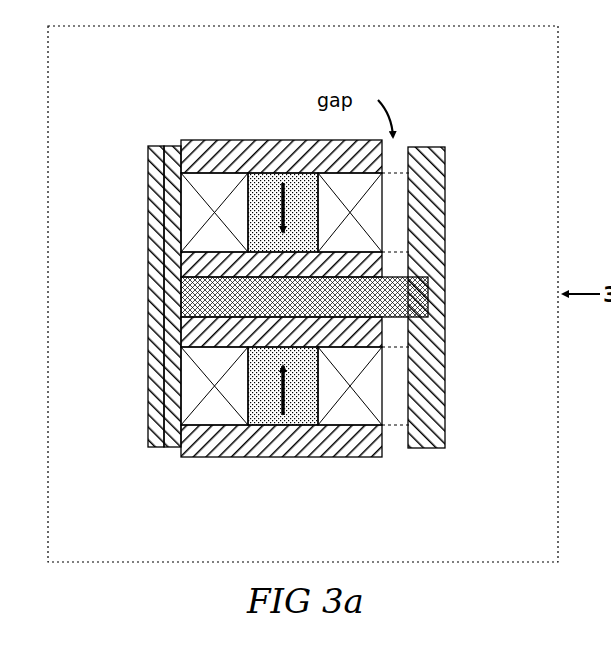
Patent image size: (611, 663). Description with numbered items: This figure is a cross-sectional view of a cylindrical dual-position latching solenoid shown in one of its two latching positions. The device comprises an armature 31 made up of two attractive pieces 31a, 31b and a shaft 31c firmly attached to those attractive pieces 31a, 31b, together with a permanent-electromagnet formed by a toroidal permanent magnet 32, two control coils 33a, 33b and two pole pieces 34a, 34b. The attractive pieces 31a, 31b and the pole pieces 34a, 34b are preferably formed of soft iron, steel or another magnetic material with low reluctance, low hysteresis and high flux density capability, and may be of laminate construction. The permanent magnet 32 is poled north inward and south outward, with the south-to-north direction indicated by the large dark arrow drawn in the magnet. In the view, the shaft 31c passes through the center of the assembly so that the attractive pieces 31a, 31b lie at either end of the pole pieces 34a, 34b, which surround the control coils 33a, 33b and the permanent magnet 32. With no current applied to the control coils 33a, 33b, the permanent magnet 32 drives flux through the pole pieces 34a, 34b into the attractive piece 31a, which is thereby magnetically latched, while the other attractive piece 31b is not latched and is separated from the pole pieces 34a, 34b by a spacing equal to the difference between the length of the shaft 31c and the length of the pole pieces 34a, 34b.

The armature 31 is at (142, 213).
The attractive piece 31a is at (167, 172).
The attractive piece 31b is at (427, 155).
The shaft 31c is at (184, 300).
The permanent magnet 32 is at (296, 403).
The control coil 33a is at (211, 400).
The control coil 33b is at (352, 400).
The pole piece 34a is at (284, 165).
The pole piece 34b is at (360, 268).